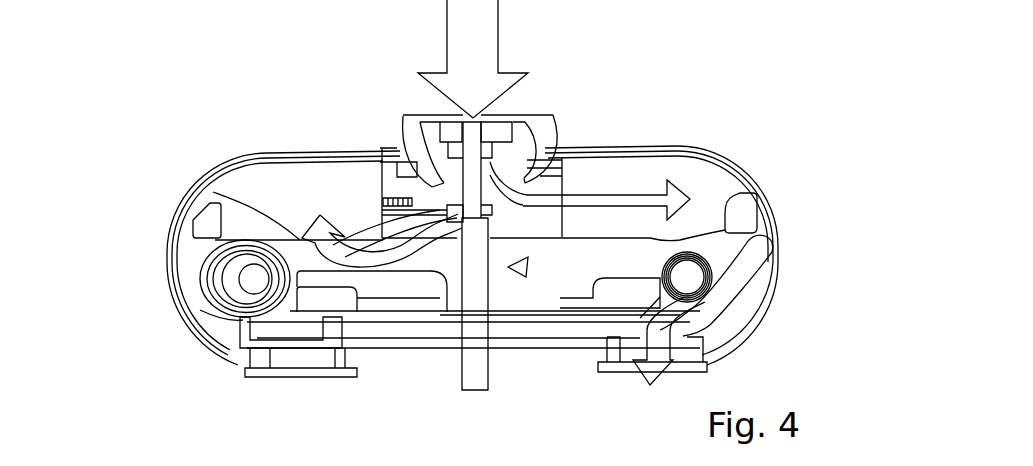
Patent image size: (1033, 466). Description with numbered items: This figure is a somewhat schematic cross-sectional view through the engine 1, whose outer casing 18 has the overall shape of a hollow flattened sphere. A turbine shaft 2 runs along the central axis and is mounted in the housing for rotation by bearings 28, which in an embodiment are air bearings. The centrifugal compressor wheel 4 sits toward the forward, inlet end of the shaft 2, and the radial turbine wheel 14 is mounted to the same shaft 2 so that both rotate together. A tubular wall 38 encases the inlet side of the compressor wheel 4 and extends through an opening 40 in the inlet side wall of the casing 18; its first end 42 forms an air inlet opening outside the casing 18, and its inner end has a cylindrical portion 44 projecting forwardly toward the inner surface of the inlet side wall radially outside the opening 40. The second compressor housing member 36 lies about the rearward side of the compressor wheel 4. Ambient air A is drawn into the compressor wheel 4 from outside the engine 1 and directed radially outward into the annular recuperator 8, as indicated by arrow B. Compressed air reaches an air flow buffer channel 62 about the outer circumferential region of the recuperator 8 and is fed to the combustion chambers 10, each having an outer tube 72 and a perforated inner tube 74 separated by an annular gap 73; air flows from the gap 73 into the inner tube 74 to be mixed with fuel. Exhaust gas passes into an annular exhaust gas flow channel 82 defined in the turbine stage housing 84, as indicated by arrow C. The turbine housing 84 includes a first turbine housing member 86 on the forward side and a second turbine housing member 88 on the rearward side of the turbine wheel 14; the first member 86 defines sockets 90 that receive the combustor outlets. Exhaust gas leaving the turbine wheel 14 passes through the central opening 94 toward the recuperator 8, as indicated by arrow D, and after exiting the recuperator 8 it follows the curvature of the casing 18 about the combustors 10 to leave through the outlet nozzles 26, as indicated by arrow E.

The engine 1 is at (823, 92).
The turbine shaft 2 is at (478, 375).
The centrifugal compressor wheel 4 is at (563, 165).
The recuperator 8 is at (287, 198).
The combustion chambers 10 is at (200, 286).
The radial turbine wheel 14 is at (525, 245).
The outer casing 18 is at (190, 203).
The outlet nozzles 26 is at (650, 388).
The bearings 28 is at (405, 128).
The second compressor housing member 36 is at (390, 225).
The tubular wall 38 is at (556, 128).
The opening 40 is at (556, 150).
The first end 42 is at (423, 110).
The cylindrical portion 44 is at (562, 237).
The air flow buffer channel 62 is at (205, 225).
The outer tube 72 is at (203, 299).
The annular gap 73 is at (201, 308).
The inner tube 74 is at (235, 315).
The annular exhaust gas flow channel 82 is at (315, 300).
The turbine stage housing 84 is at (722, 270).
The first turbine housing member 86 is at (220, 195).
The second turbine housing member 88 is at (393, 315).
The sockets 90 is at (690, 238).
The central opening 94 is at (758, 182).
The ambient air A is at (500, 25).
The arrow B is at (640, 198).
The arrow C is at (247, 337).
The arrow D is at (433, 345).
The arrow E is at (740, 285).